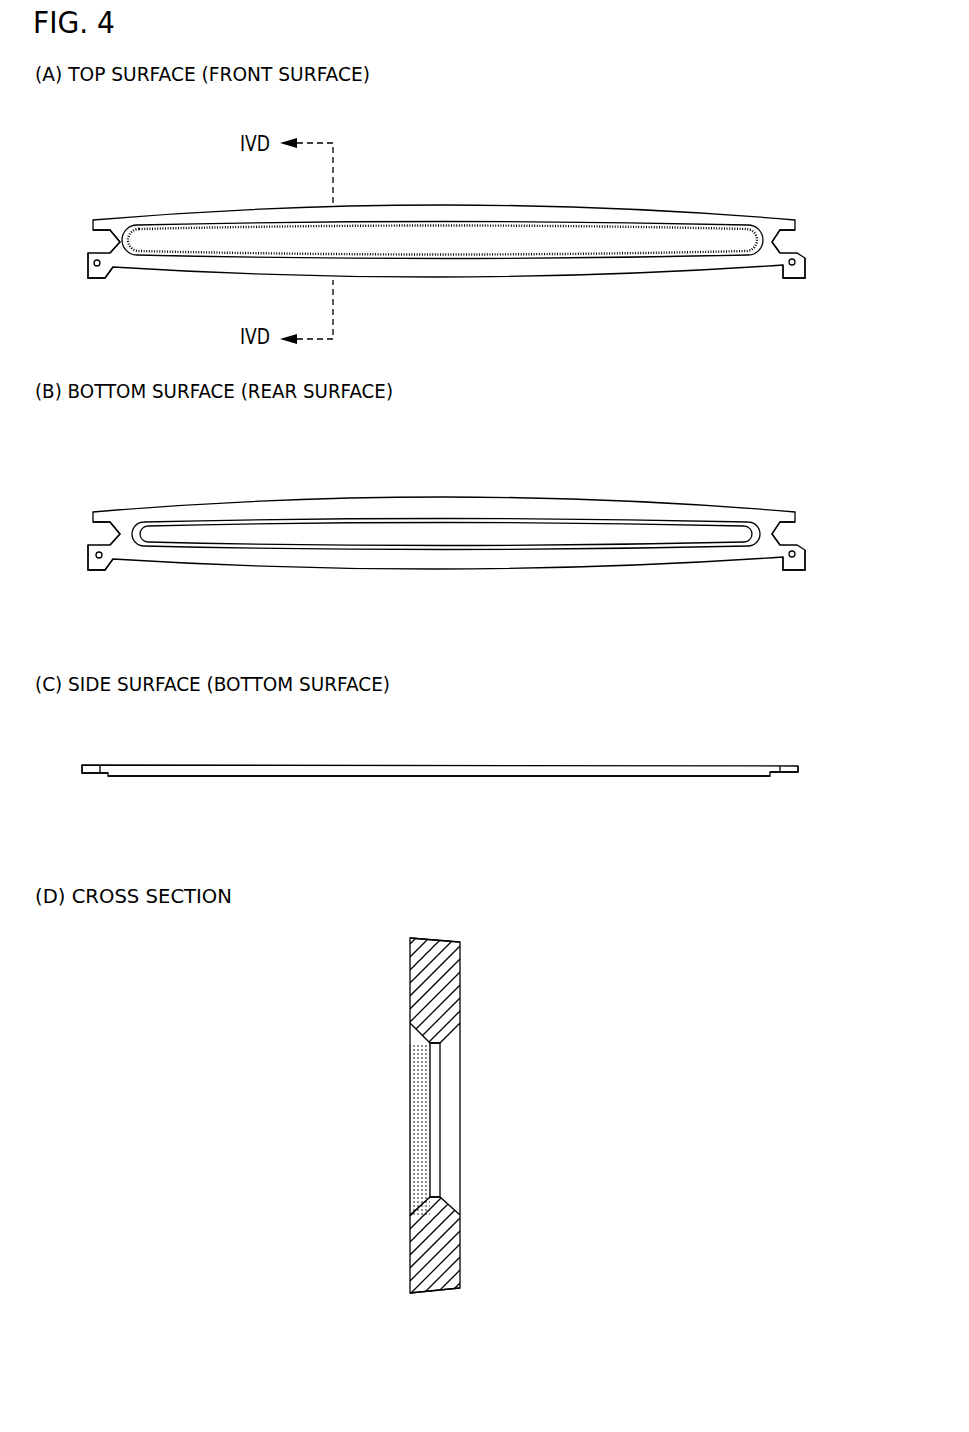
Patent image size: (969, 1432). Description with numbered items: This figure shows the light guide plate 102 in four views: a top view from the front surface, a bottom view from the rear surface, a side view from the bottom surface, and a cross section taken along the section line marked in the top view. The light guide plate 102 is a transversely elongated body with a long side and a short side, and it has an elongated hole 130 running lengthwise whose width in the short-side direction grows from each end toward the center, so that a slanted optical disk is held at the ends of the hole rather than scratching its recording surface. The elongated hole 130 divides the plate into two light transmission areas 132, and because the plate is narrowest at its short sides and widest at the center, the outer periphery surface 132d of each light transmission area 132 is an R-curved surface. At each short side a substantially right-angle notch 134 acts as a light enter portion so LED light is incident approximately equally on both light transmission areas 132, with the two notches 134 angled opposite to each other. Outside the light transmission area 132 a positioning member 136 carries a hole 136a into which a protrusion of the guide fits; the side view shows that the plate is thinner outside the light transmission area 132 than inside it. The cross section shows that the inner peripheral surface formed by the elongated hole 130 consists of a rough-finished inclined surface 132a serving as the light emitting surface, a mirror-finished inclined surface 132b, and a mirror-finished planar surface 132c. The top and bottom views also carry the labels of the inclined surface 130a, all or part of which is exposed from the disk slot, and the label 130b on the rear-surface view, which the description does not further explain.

The light guide plate 102 is at (448, 724).
The elongated hole 130 is at (442, 717).
The inclined surface 130a is at (203, 259).
The slit bottom-surface side edge 130b is at (237, 553).
The light transmission area 132 is at (443, 730).
The inclined surface 132a is at (413, 1082).
The inclined surface 132b is at (445, 1093).
The planar surface 132c is at (434, 1121).
The outer periphery surface 132d is at (439, 1020).
The notch 134 is at (448, 358).
The positioning member 136 is at (443, 547).
The hole 136a is at (448, 437).